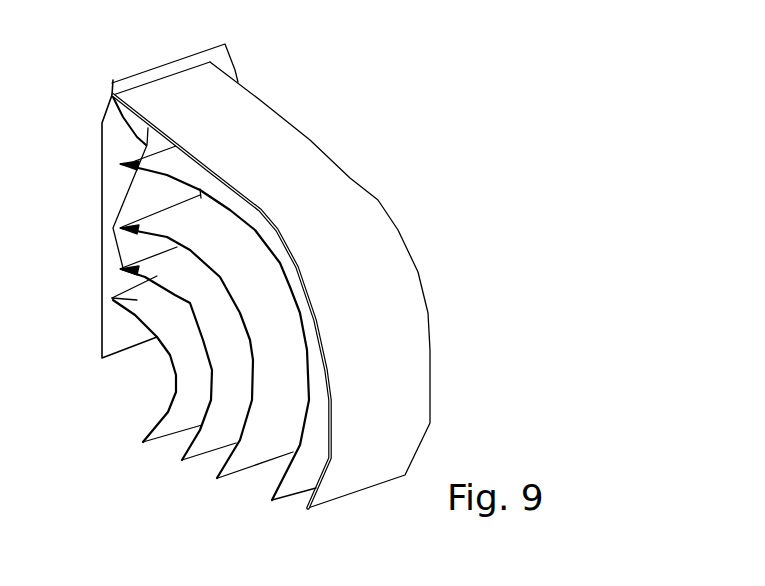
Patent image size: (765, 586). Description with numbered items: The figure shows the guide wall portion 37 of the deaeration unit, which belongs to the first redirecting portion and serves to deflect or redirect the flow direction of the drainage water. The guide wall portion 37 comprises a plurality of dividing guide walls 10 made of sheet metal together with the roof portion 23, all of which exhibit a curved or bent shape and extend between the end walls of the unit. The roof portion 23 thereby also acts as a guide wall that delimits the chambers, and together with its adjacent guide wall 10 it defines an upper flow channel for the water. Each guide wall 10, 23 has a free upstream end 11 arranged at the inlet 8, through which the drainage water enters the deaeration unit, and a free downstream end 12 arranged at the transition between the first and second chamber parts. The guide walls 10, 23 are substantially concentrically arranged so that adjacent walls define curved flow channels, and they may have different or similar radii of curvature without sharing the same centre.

The inlet 8 is at (112, 83).
The dividing guide wall 10 is at (194, 338).
The free upstream end 11 is at (138, 158).
The free downstream end 12 is at (162, 435).
The roof portion 23 is at (363, 268).
The guide wall portion 37 is at (376, 130).